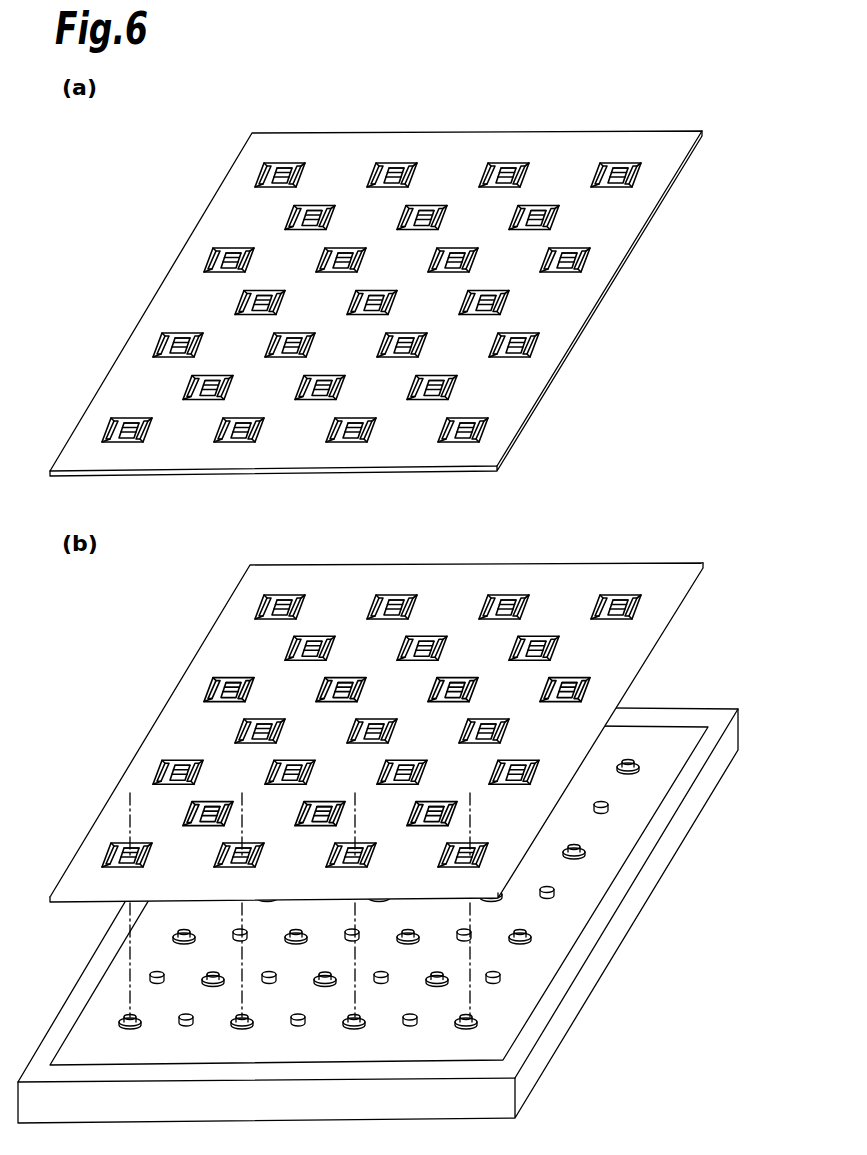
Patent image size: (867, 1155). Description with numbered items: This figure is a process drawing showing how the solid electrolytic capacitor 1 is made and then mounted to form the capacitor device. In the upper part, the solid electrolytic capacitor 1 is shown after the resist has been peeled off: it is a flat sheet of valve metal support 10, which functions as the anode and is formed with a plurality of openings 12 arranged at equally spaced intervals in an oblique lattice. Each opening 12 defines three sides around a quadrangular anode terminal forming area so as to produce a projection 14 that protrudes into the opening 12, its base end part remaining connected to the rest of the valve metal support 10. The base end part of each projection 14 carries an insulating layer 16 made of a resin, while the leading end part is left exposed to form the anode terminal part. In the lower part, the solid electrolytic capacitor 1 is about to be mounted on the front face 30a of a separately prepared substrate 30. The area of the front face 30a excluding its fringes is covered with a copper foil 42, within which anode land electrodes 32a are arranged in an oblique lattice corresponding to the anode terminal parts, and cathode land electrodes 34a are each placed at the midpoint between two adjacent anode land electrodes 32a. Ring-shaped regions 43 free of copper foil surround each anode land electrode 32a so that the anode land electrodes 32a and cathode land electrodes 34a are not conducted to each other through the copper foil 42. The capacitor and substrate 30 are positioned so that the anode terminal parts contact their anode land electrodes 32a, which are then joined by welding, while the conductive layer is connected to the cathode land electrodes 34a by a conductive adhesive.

The solid electrolytic capacitor 1 is at (627, 113).
The valve metal support 10 is at (666, 191).
The opening 12 is at (586, 258).
The projection 14 is at (571, 244).
The insulating layer 16 is at (581, 249).
The substrate 30 is at (705, 704).
The front face 30a is at (670, 800).
The copper foil 42 is at (605, 853).
The anode land electrode 32a is at (475, 1013).
The cathode land electrode 34a is at (498, 973).
The ring-shaped region 43 is at (483, 1027).